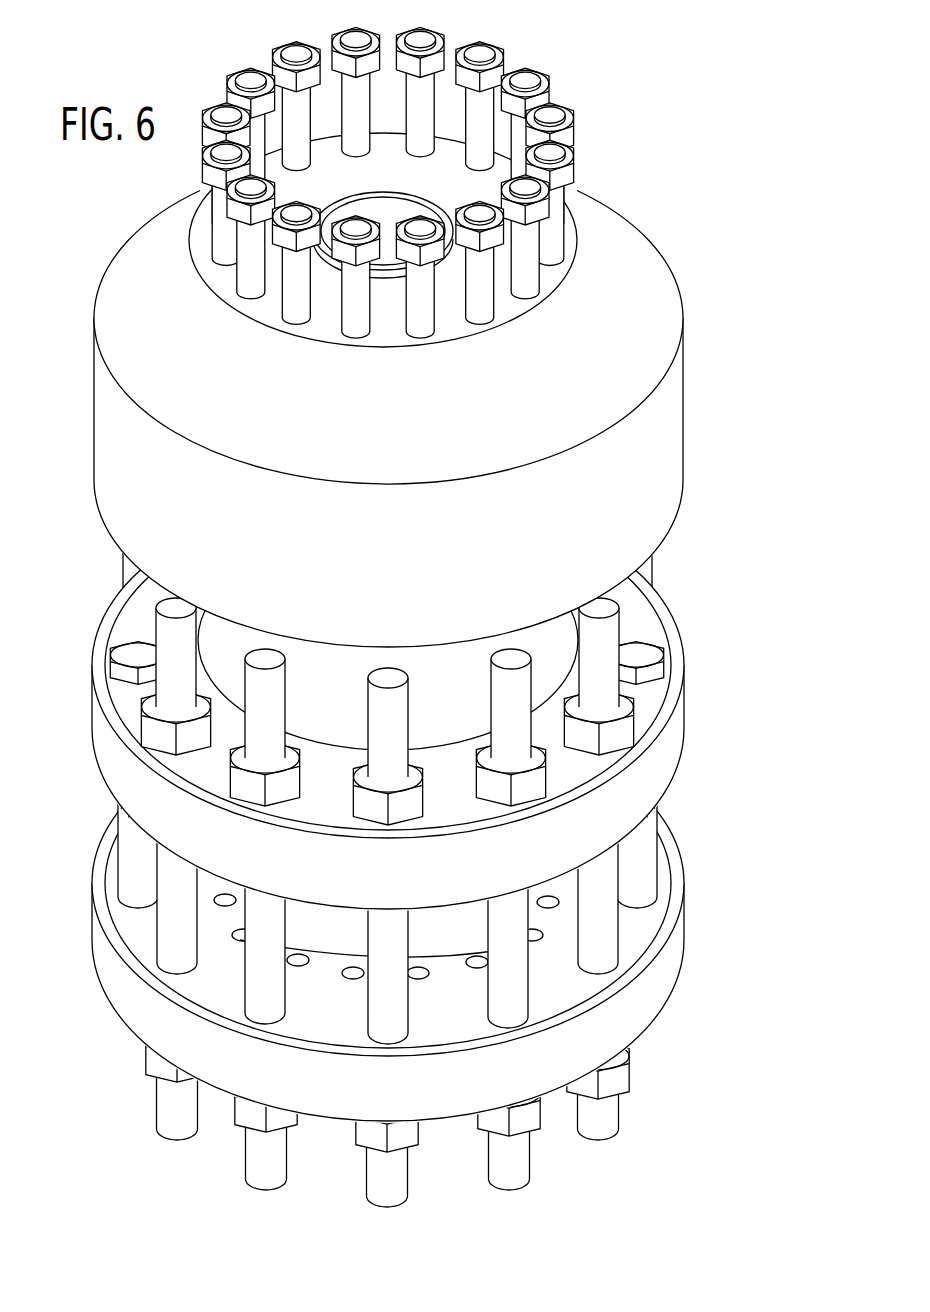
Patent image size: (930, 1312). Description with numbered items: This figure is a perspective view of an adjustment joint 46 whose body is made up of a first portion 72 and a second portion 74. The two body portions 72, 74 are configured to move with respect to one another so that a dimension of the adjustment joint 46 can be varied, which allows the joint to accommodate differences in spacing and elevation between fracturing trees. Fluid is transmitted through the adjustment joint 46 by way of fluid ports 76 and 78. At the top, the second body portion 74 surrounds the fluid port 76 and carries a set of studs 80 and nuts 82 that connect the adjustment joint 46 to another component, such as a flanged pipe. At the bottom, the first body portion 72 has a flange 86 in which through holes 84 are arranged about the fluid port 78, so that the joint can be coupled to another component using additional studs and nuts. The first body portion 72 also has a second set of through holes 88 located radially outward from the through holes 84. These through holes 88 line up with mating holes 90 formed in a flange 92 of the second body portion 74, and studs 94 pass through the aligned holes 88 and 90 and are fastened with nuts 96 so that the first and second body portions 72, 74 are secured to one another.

The adjustment joint 46 is at (389, 615).
The first portion 72 is at (399, 915).
The second portion 74 is at (105, 468).
The fluid port 76 is at (388, 155).
The fluid port 78 is at (399, 970).
The studs 80 is at (242, 270).
The nuts 82 is at (268, 70).
The through holes 84 is at (353, 976).
The flange 86 is at (125, 1005).
The through holes 88 is at (183, 965).
The mating holes 90 is at (240, 803).
The flange 92 is at (120, 765).
The studs 94 is at (640, 585).
The nuts 96 is at (120, 660).